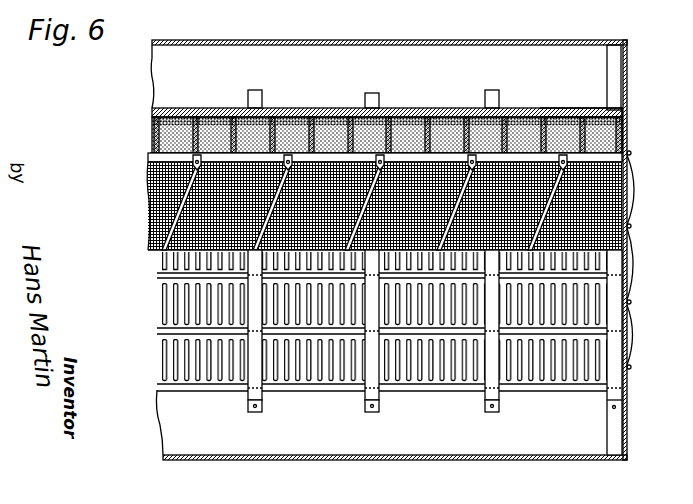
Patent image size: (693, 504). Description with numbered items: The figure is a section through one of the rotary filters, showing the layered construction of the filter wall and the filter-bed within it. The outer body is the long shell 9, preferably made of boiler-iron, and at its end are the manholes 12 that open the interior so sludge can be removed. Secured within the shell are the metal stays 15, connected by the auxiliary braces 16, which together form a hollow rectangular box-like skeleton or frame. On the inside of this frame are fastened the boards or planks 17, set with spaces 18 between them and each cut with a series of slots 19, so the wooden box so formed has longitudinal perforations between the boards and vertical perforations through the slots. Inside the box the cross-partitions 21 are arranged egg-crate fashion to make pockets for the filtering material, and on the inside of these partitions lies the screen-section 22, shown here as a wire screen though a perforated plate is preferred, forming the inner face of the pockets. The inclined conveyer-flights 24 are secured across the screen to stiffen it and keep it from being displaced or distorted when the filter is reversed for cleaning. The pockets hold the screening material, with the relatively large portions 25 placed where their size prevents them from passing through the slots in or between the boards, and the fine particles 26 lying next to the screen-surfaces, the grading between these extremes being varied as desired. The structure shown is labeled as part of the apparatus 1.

The housing 1 is at (428, 34).
The shell 9 is at (464, 77).
The manholes 12 is at (632, 172).
The metal stays 15 is at (255, 376).
The auxiliary braces 16 is at (263, 104).
The boards or planks 17 is at (400, 107).
The spaces 18 is at (158, 335).
The slots 19 is at (330, 112).
The cross-partitions 21 is at (568, 113).
The screen-section 22 is at (165, 155).
The inclined conveyer-flights 24 is at (185, 200).
The relatively large portions 25 is at (446, 113).
The fine particles 26 is at (458, 113).